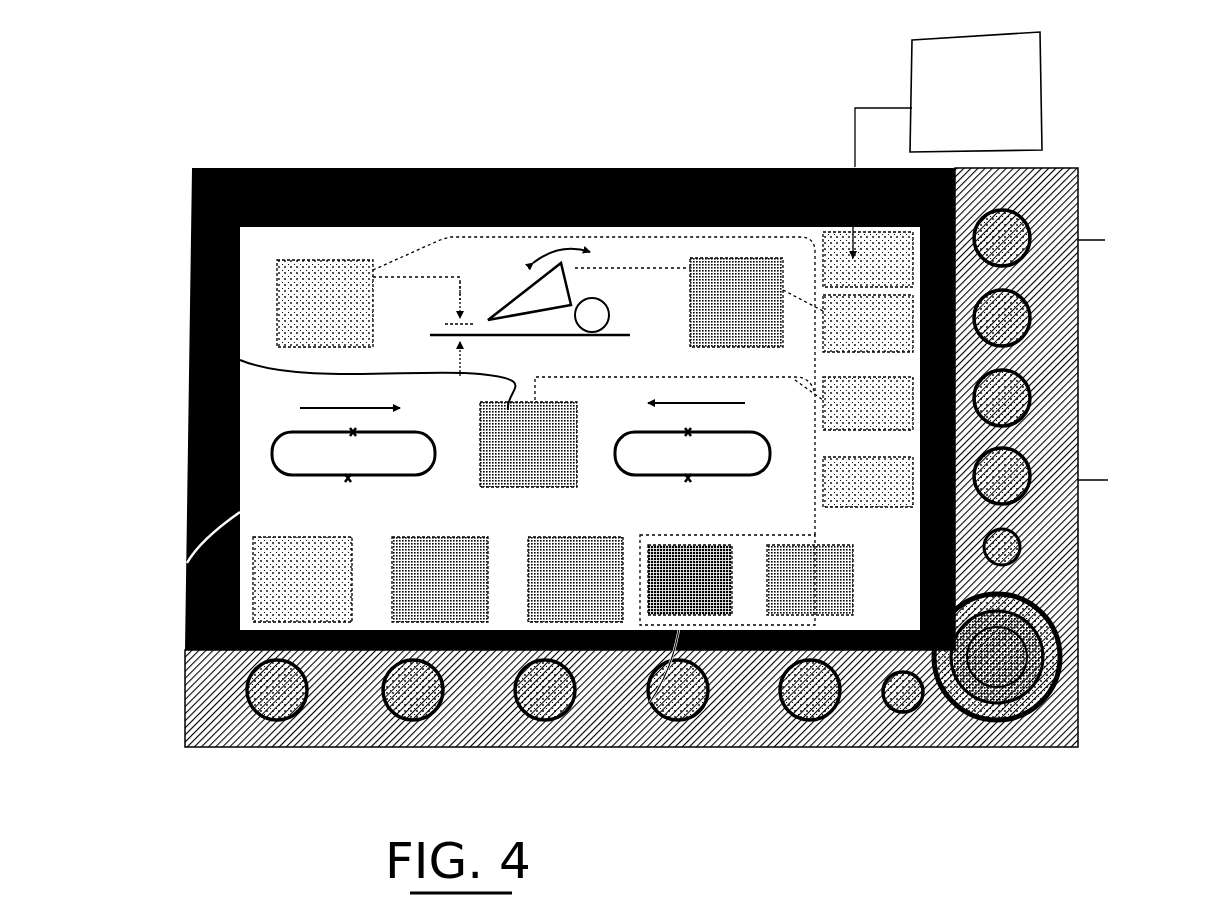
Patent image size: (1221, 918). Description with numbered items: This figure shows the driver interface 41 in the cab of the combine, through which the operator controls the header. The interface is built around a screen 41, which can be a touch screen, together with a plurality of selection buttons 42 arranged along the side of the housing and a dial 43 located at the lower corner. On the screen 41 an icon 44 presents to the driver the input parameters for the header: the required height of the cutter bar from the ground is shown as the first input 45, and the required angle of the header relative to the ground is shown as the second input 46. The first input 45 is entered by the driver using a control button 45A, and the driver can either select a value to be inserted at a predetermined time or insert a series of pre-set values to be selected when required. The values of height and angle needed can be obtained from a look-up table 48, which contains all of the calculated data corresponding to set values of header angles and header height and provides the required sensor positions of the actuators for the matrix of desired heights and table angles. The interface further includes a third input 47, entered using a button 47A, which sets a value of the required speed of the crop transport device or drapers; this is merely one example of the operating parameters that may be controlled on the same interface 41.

The driver interface screen 41 is at (622, 167).
The selection buttons 42 is at (1040, 305).
The dial 43 is at (1067, 548).
The icon 44 is at (523, 233).
The first input 45 is at (325, 258).
The control button 45A is at (1078, 200).
The second input 46 is at (744, 262).
The third input 47 is at (192, 330).
The button 47A is at (1078, 397).
The look-up table 48 is at (1042, 72).